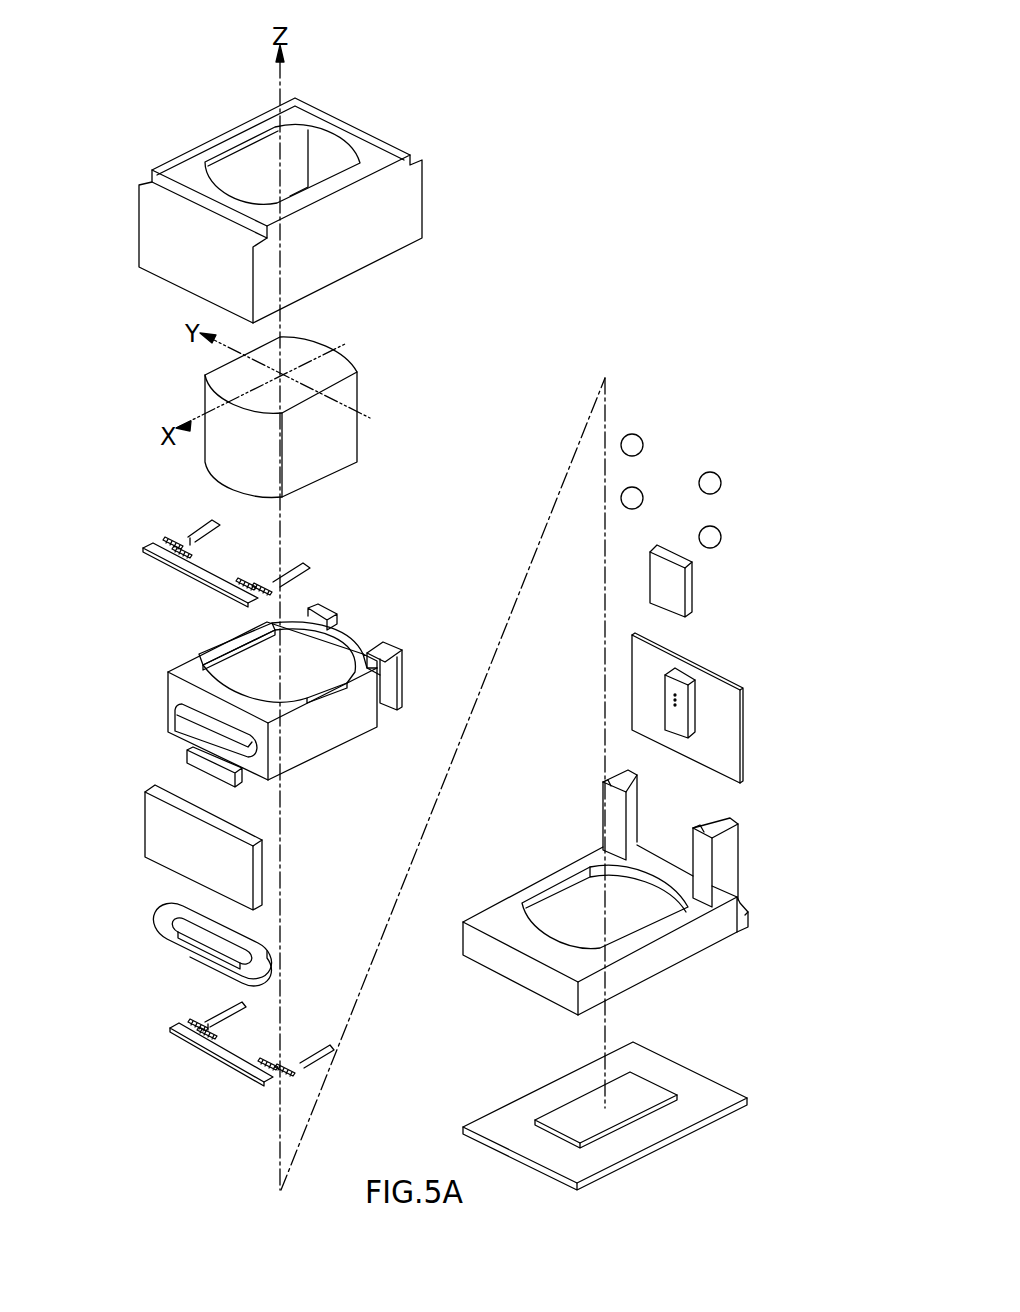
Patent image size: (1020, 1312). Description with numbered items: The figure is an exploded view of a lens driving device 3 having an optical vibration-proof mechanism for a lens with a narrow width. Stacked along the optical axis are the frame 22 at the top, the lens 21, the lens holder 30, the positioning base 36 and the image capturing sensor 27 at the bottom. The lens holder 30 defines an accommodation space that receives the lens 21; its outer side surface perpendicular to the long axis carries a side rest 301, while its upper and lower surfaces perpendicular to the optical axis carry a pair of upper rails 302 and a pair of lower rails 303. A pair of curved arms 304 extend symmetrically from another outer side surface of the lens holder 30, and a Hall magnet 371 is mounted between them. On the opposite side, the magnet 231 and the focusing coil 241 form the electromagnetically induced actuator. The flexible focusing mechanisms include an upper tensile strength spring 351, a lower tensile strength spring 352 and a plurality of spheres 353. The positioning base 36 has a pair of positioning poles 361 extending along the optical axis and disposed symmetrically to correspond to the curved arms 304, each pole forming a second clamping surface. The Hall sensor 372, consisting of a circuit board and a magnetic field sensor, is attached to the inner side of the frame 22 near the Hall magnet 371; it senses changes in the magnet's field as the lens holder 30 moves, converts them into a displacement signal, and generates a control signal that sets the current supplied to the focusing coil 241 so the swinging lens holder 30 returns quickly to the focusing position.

The lens driving device 3 is at (652, 133).
The frame 22 is at (423, 195).
The lens 21 is at (340, 362).
The lens holder 30 is at (386, 610).
The side rest 301 is at (183, 718).
The upper rails 302 is at (222, 647).
The lower rails 303 is at (323, 760).
The curved arms 304 is at (402, 678).
The magnet 231 is at (157, 823).
The focusing coil 241 is at (165, 928).
The upper tensile strength spring 351 is at (157, 550).
The lower tensile strength spring 352 is at (170, 1030).
The spheres 353 is at (722, 482).
The positioning poles 361 is at (615, 820).
The positioning base 36 is at (738, 898).
The Hall magnet 371 is at (680, 587).
The Hall sensor 372 is at (683, 680).
The image capturing sensor 27 is at (645, 1087).